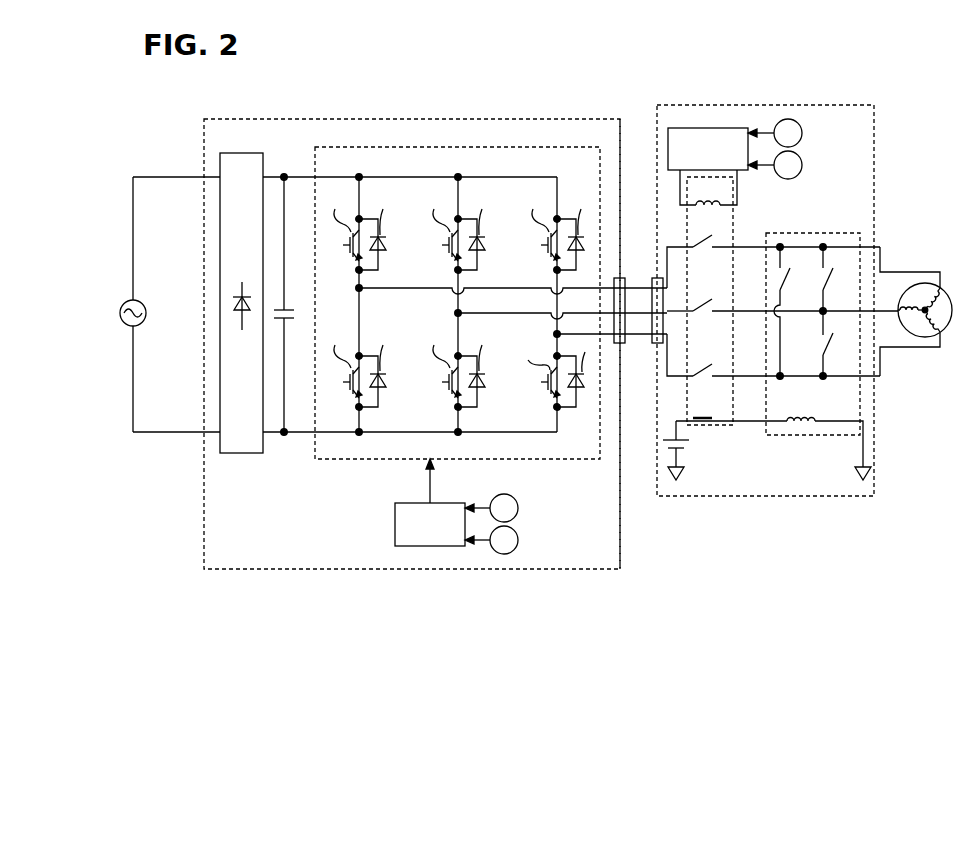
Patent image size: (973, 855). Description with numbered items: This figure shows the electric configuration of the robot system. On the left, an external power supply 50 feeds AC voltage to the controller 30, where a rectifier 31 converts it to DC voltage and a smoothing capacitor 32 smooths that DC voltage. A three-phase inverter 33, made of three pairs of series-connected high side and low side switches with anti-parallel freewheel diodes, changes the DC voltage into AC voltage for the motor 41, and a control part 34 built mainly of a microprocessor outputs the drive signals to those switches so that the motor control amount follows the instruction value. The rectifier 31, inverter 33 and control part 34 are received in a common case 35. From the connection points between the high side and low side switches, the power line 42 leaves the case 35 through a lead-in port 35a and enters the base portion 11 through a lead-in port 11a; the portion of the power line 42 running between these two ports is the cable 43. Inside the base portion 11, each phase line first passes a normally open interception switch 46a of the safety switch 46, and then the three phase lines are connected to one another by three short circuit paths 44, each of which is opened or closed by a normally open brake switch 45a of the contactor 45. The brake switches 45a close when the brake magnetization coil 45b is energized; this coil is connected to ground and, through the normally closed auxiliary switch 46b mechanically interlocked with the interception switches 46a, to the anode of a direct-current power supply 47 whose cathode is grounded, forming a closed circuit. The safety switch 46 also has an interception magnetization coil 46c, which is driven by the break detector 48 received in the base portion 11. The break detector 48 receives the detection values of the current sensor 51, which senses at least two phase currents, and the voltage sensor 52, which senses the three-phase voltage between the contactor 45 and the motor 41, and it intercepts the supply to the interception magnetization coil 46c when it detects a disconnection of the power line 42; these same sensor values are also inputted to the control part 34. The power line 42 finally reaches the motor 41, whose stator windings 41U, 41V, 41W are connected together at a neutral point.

The base portion 11 is at (874, 130).
The lead-in port 11a is at (654, 276).
The controller 30 is at (198, 149).
The rectifier 31 is at (262, 153).
The smoothing capacitor 32 is at (288, 307).
The three-phase inverter 33 is at (546, 148).
The control part 34 is at (441, 503).
The case 35 is at (599, 119).
The lead-in port 35a is at (619, 274).
The motor 41 is at (924, 321).
The U phase stator winding 41U is at (934, 290).
The V phase stator winding 41V is at (910, 334).
The W phase stator winding 41W is at (934, 338).
The power line 42 is at (890, 352).
The cable 43 is at (642, 275).
The short circuit path 44 is at (824, 256).
The contactor 45 is at (812, 233).
The brake switch 45a is at (797, 281).
The brake magnetization coil 45b is at (815, 405).
The safety switch 46 is at (733, 231).
The interception switch 46a is at (706, 244).
The auxiliary switch 46b is at (704, 417).
The interception magnetization coil 46c is at (708, 187).
The direct-current power supply 47 is at (672, 430).
The break detector 48 is at (719, 128).
The external power supply 50 is at (128, 300).
The current sensor 51 is at (519, 540).
The voltage sensor 52 is at (519, 508).